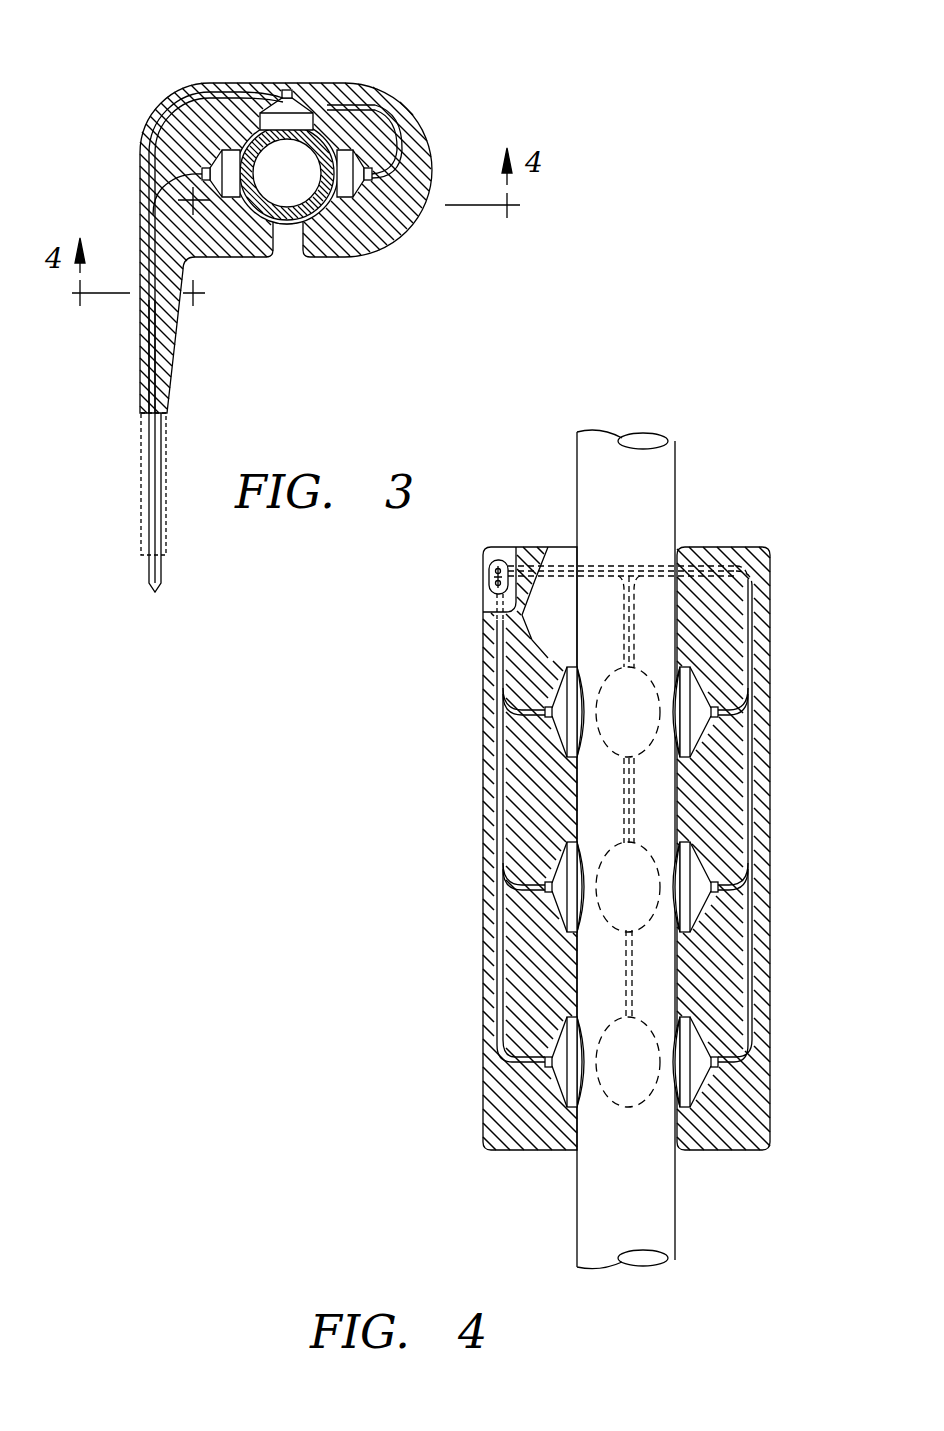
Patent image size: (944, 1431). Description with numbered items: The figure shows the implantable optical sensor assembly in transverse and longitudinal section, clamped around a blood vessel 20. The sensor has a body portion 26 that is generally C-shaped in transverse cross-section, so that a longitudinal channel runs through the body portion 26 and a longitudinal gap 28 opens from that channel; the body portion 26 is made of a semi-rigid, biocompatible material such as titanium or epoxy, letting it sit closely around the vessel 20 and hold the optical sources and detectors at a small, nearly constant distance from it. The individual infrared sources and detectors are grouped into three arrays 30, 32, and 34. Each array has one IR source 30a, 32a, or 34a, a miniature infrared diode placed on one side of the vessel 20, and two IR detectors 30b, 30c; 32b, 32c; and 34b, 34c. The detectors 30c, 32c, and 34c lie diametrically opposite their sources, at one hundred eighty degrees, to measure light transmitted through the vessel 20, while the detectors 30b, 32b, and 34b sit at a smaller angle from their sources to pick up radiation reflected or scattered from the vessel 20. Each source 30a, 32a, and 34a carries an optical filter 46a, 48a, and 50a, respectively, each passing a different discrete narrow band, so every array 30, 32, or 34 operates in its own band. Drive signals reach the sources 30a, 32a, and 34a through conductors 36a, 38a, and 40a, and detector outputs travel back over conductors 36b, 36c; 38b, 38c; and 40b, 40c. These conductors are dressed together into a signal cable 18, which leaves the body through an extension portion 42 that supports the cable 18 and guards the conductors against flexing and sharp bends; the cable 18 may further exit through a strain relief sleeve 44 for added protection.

In FIG. 3, the signal cable 18 is at (148, 568).
In FIG. 3, the vessel 20 is at (355, 243).
In FIG. 3, the body portion 26 is at (397, 222).
In FIG. 3, the longitudinal gap 28 is at (290, 238).
In FIG. 4, the first array 30 is at (800, 611).
In FIG. 3, the IR source 30a is at (197, 100).
In FIG. 4, the IR source 30a is at (562, 725).
In FIG. 3, the IR detector 30b is at (425, 143).
In FIG. 4, the IR detector 30b is at (742, 740).
In FIG. 3, the IR detector 30c is at (295, 105).
In FIG. 4, the IR detector 30c is at (618, 728).
In FIG. 4, the second array 32 is at (800, 860).
In FIG. 4, the IR source 32a is at (560, 897).
In FIG. 4, the IR detector 32b is at (742, 932).
In FIG. 4, the IR detector 32c is at (620, 905).
In FIG. 4, the third array 34 is at (800, 1052).
In FIG. 4, the IR source 34a is at (560, 1105).
In FIG. 4, the IR detector 34b is at (742, 1103).
In FIG. 4, the IR detector 34c is at (622, 1072).
In FIG. 3, the conductor 36a is at (143, 160).
In FIG. 4, the conductor 36a is at (558, 722).
In FIG. 3, the conductor 36b is at (243, 87).
In FIG. 4, the conductor 36b is at (622, 615).
In FIG. 3, the conductor 36c is at (395, 108).
In FIG. 4, the conductor 36c is at (742, 713).
In FIG. 4, the conductor 38a is at (520, 885).
In FIG. 4, the conductor 38b is at (622, 792).
In FIG. 4, the conductor 38c is at (742, 904).
In FIG. 4, the conductor 40a is at (493, 1052).
In FIG. 4, the conductor 40b is at (560, 1008).
In FIG. 4, the conductor 40c is at (742, 1057).
In FIG. 3, the extension portion 42 is at (140, 360).
In FIG. 4, the extension portion 42 is at (488, 567).
In FIG. 3, the strain relief sleeve 44 is at (142, 492).
In FIG. 3, the optical filter 46a is at (250, 215).
In FIG. 4, the optical filter 46a is at (560, 655).
In FIG. 4, the optical filter 48a is at (565, 932).
In FIG. 4, the optical filter 50a is at (548, 1078).